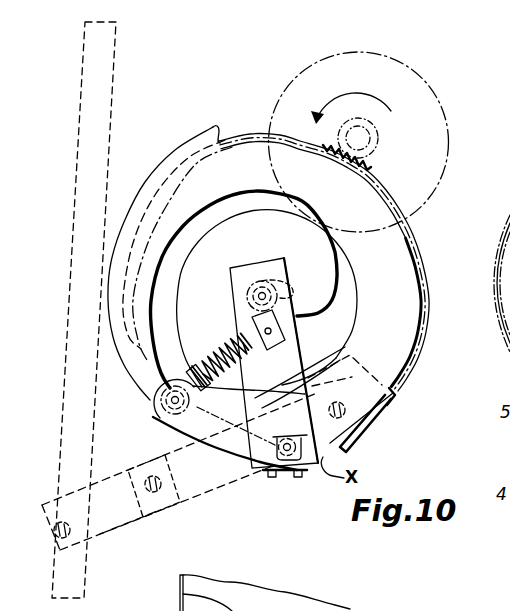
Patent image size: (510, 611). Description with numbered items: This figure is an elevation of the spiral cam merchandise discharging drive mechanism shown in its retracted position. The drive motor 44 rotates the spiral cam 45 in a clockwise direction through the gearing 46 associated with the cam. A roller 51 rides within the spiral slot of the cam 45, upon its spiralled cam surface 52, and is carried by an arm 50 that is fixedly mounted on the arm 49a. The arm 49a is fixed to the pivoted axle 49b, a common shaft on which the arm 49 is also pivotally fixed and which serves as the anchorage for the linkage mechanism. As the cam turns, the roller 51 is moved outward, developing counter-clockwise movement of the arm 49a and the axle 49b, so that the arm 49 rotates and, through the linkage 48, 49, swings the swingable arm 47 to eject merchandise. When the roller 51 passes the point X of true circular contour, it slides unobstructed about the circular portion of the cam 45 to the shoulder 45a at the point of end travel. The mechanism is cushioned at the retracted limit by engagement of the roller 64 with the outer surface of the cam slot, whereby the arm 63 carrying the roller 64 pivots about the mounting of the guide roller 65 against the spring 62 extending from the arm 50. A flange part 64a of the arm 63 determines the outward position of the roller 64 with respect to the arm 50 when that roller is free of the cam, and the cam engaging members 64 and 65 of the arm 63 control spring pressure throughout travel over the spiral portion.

The drive motor 44 is at (415, 68).
The spiral cam 45 is at (198, 125).
The shoulder 45a is at (221, 136).
The pinion gearing 46 is at (372, 162).
The swingable arm 47 is at (113, 53).
The link 48 is at (125, 523).
The arm 49 is at (205, 490).
The arm 49a is at (397, 399).
The pivoted axle 49b is at (389, 414).
The arm 50 is at (326, 344).
The roller 51 is at (280, 277).
The spiralled cam surface 52 is at (220, 227).
The spring 62 is at (210, 348).
The arm 63 is at (183, 432).
The roller 64 is at (158, 426).
The flange part 64a is at (340, 350).
The guide roller 65 is at (292, 470).